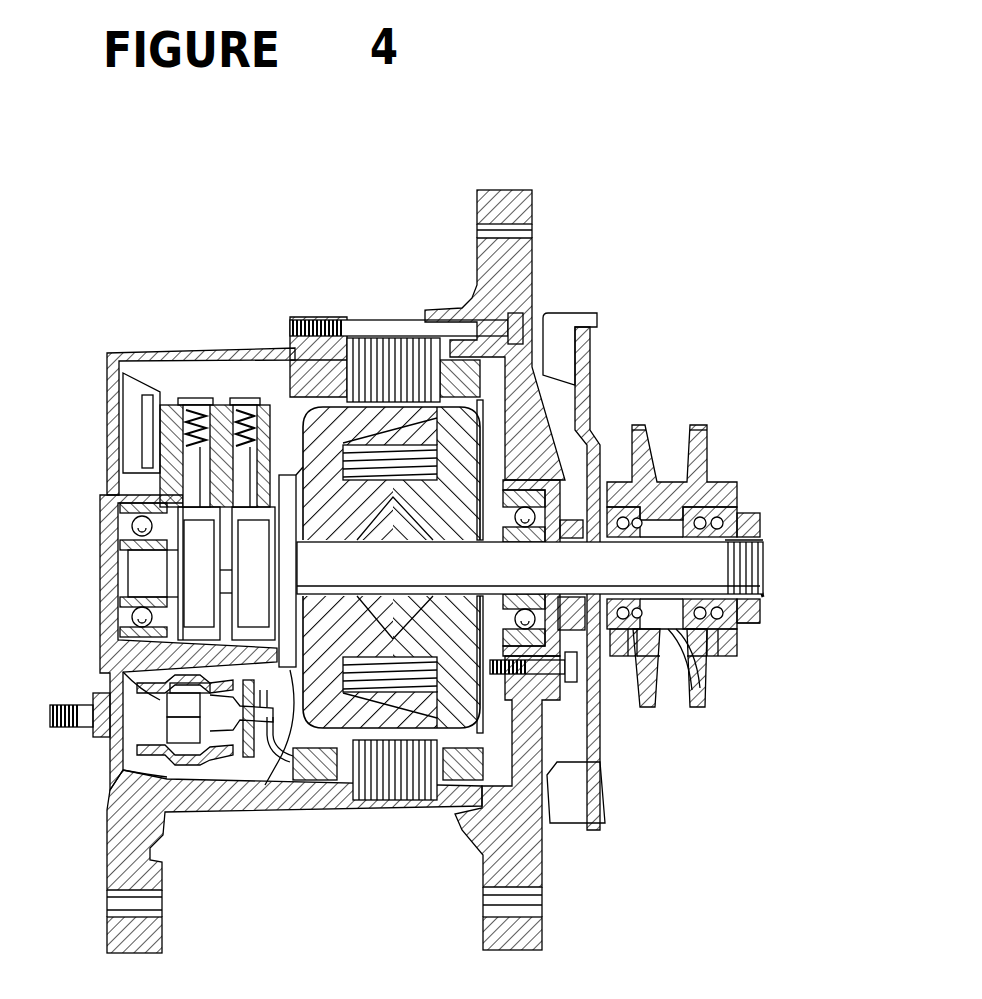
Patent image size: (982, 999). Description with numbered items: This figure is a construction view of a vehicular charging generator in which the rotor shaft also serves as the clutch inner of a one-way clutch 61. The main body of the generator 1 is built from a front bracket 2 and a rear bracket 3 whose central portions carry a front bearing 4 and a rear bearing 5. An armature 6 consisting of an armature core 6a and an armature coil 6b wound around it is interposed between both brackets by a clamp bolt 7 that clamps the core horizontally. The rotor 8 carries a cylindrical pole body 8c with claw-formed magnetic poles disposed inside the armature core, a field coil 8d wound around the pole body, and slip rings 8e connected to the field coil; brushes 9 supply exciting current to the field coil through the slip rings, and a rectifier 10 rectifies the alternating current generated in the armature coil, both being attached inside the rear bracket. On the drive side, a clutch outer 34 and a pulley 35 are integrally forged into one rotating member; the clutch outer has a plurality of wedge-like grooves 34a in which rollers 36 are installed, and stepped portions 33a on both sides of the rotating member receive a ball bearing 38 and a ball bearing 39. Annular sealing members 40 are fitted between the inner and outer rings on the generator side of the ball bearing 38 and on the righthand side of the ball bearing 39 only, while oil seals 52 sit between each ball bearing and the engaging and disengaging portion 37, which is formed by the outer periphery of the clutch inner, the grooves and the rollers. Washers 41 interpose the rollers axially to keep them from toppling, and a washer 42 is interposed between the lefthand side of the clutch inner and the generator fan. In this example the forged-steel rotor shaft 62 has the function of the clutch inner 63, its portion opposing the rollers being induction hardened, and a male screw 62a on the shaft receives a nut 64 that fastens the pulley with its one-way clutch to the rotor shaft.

The main body of a generator 1 is at (146, 352).
The front bracket 2 is at (483, 870).
The rear bracket 3 is at (163, 880).
The front bearing 4 is at (450, 680).
The rear bearing 5 is at (135, 505).
The armature 6 is at (353, 515).
The armature core 6a is at (372, 340).
The armature coil 6b is at (285, 372).
The clamp bolt 7 is at (410, 326).
The rotor 8 is at (252, 764).
The cylindrical pole body 8c is at (347, 735).
The field coil 8d is at (367, 783).
The slip rings 8e is at (247, 633).
The brushes 9 is at (196, 398).
The rectifier 10 is at (112, 758).
The stepped portions 33a is at (745, 513).
The clutch outer 34 is at (710, 487).
The wedge-like grooves 34a is at (710, 500).
The pulley 35 is at (650, 440).
The rollers 36 is at (717, 677).
The engaging and disengaging portion 37 is at (711, 708).
The ball bearing 38 is at (590, 690).
The ball bearing 39 is at (735, 648).
The annular sealing members 40 is at (585, 600).
The washers 41 is at (724, 668).
The washer 42 is at (605, 470).
The oil seals 52 is at (713, 660).
The one-way clutch 61 is at (739, 479).
The rotor shaft 62 is at (602, 565).
The male screw 62a is at (763, 562).
The clutch inner 63 is at (765, 590).
The nut 64 is at (757, 613).